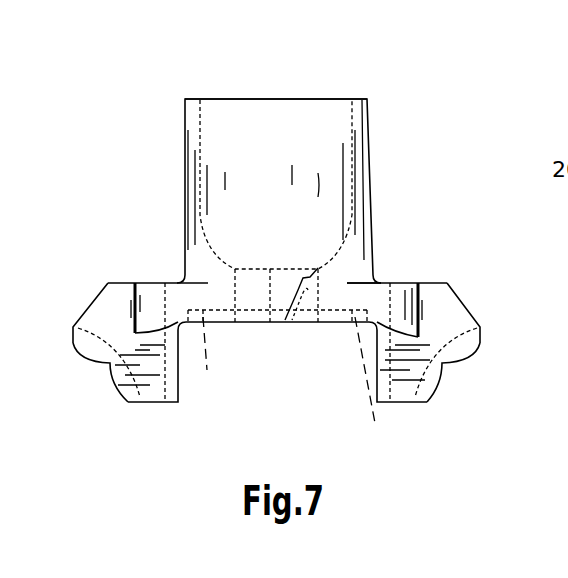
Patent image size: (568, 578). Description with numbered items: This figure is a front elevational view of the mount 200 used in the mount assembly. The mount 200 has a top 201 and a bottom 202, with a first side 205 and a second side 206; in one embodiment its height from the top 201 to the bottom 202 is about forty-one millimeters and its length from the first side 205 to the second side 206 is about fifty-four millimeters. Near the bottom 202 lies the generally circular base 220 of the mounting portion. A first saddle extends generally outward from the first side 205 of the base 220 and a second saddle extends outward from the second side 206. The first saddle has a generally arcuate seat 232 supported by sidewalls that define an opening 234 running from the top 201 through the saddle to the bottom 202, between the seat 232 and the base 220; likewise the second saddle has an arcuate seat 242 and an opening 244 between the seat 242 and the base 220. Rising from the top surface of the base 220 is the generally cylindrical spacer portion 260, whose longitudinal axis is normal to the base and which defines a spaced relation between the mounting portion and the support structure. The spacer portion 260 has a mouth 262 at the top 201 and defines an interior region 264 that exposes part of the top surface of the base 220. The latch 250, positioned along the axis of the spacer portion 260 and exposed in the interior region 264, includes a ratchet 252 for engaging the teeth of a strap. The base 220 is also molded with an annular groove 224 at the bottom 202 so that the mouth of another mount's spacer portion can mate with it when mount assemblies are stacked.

The mount 200 is at (105, 102).
The top 201 is at (237, 88).
The bottom 202 is at (208, 425).
The first side 205 is at (125, 235).
The second side 206 is at (440, 252).
The base 220 is at (363, 293).
The annular groove 224 is at (306, 384).
The seat 232 is at (110, 363).
The opening 234 is at (122, 328).
The seat 242 is at (442, 363).
The opening 244 is at (437, 332).
The latch 250 is at (263, 325).
The ratchet 252 is at (290, 272).
The spacer portion 260 is at (170, 210).
The mouth 262 is at (277, 110).
The interior region 264 is at (285, 243).